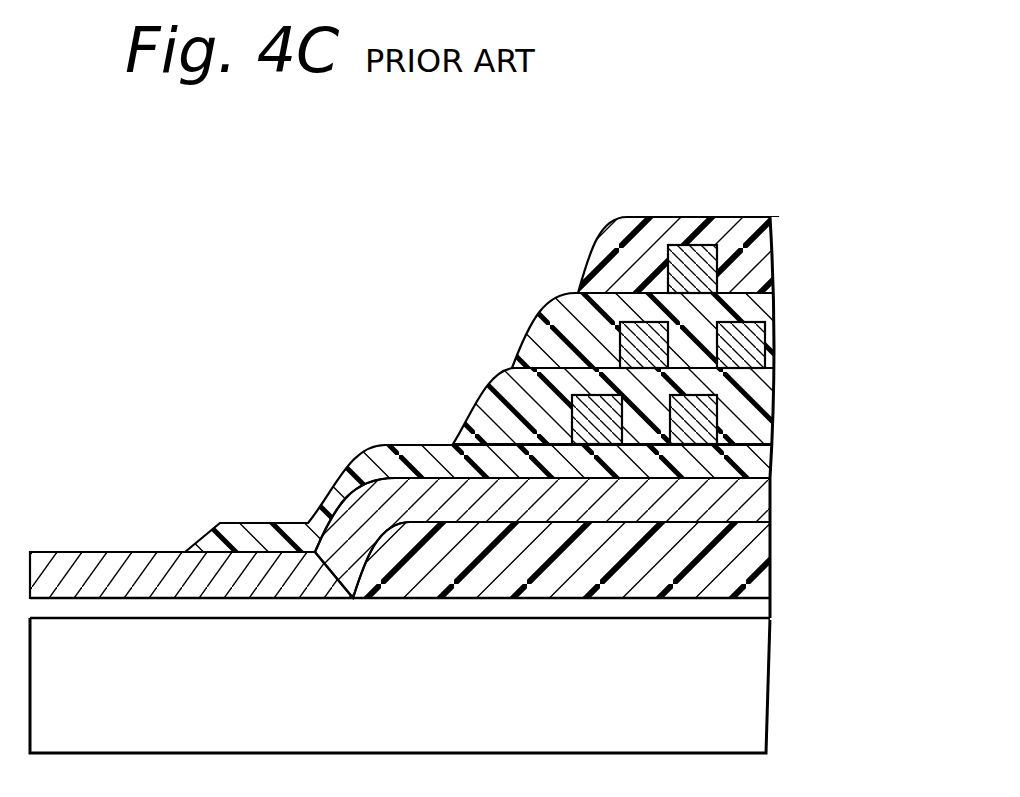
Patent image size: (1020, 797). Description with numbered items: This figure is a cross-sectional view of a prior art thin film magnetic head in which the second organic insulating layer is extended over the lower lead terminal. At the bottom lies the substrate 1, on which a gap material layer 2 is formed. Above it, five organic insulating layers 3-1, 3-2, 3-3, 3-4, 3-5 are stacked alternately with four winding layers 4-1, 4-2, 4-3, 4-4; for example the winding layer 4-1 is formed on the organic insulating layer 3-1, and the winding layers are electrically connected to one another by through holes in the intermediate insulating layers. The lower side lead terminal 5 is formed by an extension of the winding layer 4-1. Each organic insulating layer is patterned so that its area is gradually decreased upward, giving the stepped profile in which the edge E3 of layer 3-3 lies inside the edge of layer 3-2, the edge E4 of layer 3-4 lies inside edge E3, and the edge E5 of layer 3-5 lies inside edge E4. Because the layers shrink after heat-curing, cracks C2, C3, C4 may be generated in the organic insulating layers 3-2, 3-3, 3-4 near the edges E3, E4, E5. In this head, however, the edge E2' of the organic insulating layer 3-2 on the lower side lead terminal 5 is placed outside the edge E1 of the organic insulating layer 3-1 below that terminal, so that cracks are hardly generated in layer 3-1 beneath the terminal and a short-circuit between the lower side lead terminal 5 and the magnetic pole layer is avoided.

The substrate 1 is at (743, 693).
The gap material layer 2 is at (755, 607).
The lower side lead terminal 5 is at (90, 568).
The organic insulating layer 3-1 is at (737, 563).
The organic insulating layer 3-2 is at (745, 460).
The organic insulating layer 3-3 is at (757, 387).
The organic insulating layer 3-4 is at (760, 303).
The organic insulating layer 3-5 is at (763, 240).
The winding layer 4-1 is at (750, 498).
The winding layer 4-2 is at (755, 425).
The winding layer 4-3 is at (748, 342).
The winding layer 4-4 is at (693, 267).
The edge of organic insulating layer 3-1 E1 is at (345, 588).
The edge of organic insulating layer 3-2 E2' is at (185, 502).
The edge of organic insulating layer 3-3 E3 is at (451, 432).
The edge of organic insulating layer 3-4 E4 is at (508, 356).
The edge of organic insulating layer 3-5 E5 is at (574, 282).
The crack C2 is at (428, 442).
The crack C3 is at (492, 396).
The crack C4 is at (570, 298).